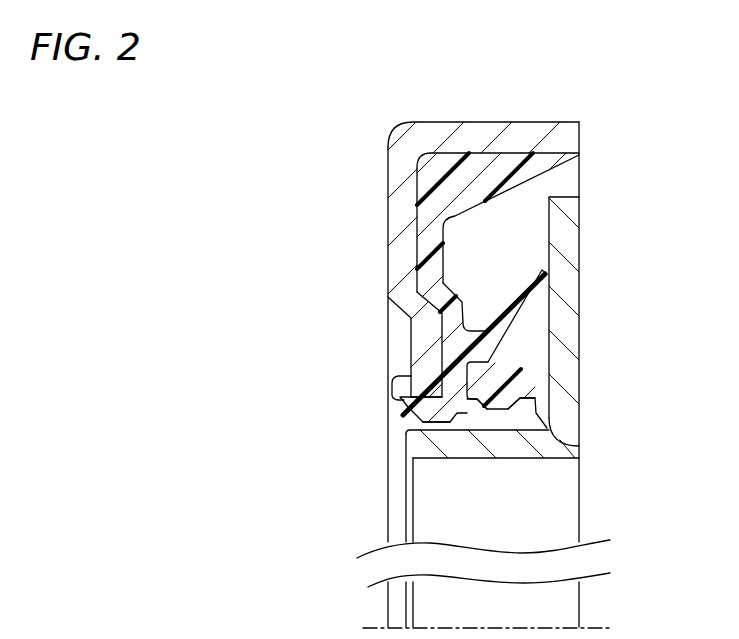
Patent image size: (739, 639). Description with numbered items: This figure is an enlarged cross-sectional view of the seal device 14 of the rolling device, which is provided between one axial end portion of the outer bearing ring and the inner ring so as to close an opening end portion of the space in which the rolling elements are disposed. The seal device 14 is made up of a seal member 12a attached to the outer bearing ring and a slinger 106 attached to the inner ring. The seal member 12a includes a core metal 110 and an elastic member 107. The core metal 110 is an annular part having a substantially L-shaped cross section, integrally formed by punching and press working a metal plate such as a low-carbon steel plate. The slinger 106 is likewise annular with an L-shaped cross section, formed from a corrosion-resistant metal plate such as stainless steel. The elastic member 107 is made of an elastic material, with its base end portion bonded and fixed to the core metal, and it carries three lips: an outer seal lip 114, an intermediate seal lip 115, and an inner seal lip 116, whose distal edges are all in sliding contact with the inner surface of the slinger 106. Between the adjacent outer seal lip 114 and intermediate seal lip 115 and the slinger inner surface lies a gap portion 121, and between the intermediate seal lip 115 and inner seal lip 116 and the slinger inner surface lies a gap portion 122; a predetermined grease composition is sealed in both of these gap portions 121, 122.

The seal device 14 is at (606, 152).
The seal member 12a is at (272, 183).
The slinger 106 is at (563, 365).
The elastic member 107 is at (393, 393).
The core metal 110 is at (400, 225).
The outer seal lip 114 is at (520, 313).
The intermediate seal lip 115 is at (525, 410).
The inner seal lip 116 is at (458, 422).
The gap portion 121 is at (515, 370).
The gap portion 122 is at (475, 427).